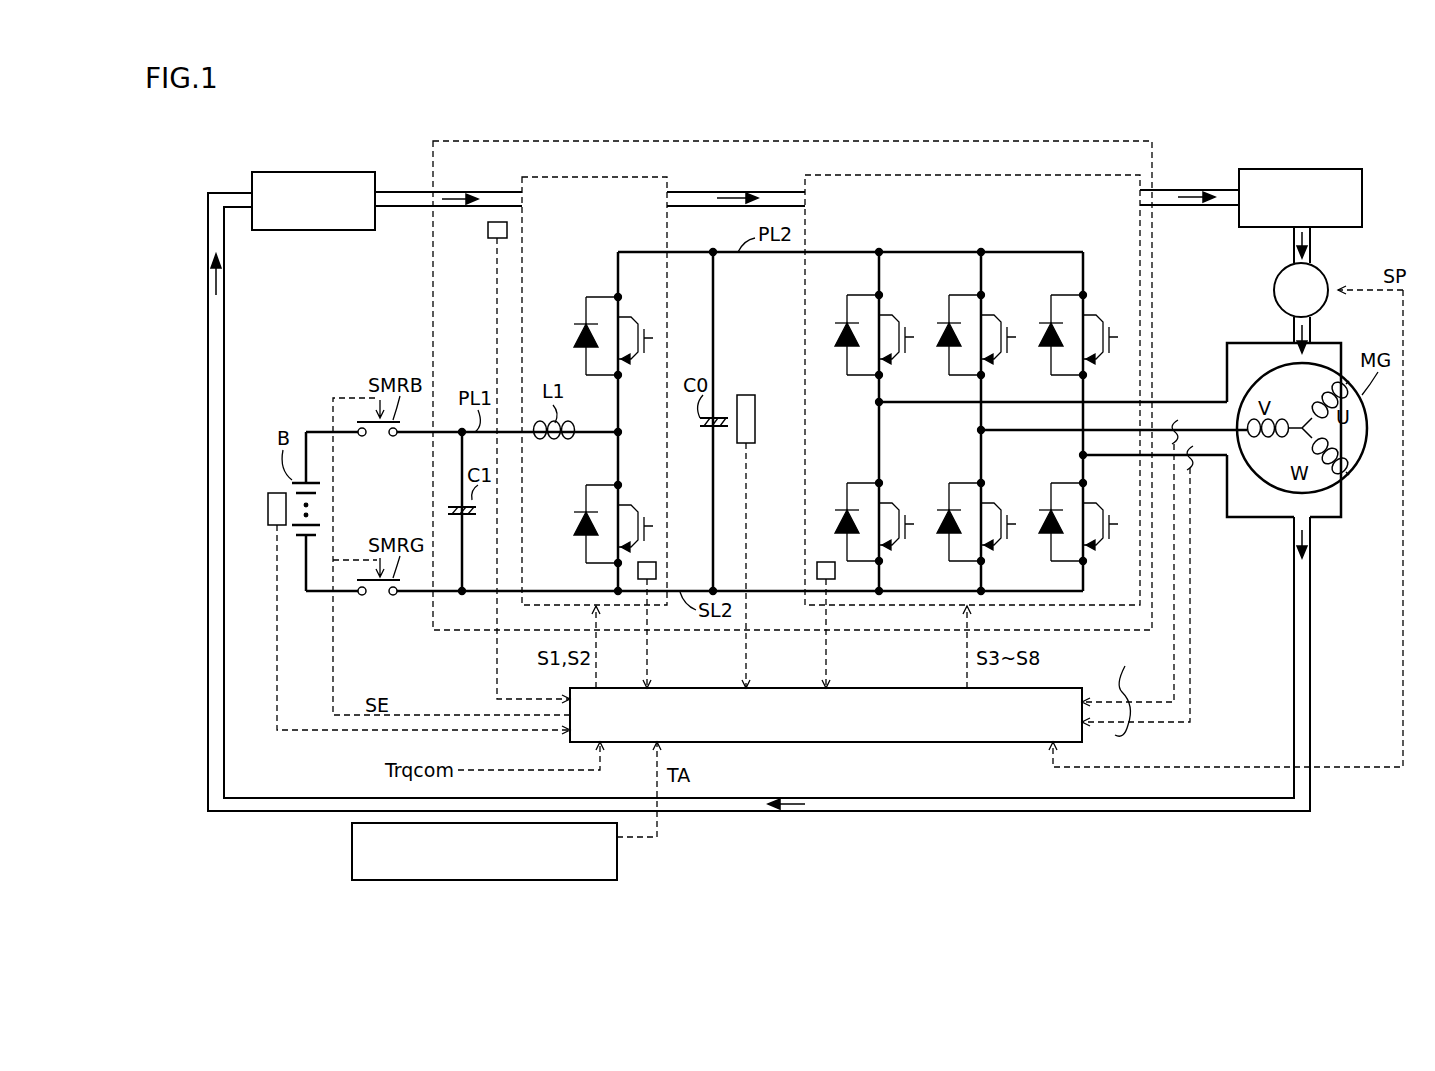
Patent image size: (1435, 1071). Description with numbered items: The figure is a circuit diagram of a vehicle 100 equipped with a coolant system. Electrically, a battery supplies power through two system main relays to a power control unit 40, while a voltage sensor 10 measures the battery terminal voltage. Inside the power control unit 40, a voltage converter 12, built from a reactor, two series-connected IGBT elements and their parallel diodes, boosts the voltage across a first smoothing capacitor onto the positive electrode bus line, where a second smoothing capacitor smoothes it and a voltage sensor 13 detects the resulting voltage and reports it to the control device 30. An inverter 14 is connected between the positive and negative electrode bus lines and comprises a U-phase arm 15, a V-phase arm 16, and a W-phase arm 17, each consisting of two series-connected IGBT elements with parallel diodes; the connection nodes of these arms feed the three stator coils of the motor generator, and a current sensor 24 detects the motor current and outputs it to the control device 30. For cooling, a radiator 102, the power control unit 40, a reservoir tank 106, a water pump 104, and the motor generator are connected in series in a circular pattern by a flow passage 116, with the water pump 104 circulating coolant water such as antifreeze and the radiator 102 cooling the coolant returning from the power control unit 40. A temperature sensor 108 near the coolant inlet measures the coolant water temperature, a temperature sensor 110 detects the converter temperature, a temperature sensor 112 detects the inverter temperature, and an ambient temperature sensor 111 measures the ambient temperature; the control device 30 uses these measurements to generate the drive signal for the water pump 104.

The vehicle 100 is at (242, 128).
The radiator 102 is at (322, 172).
The water pump 104 is at (1320, 272).
The reservoir tank 106 is at (1312, 169).
The temperature sensor 108 is at (488, 230).
The temperature sensor 110 is at (655, 562).
The ambient temperature sensor 111 is at (352, 840).
The temperature sensor 112 is at (817, 571).
The flow passage 116 is at (231, 823).
The voltage sensor 10 is at (272, 493).
The voltage converter 12 is at (600, 177).
The voltage sensor 13 is at (746, 395).
The inverter 14 is at (972, 175).
The U-phase arm 15 is at (872, 405).
The V-phase arm 16 is at (975, 433).
The W-phase arm 17 is at (1075, 457).
The current sensor 24 is at (1178, 420).
The control device 30 is at (895, 688).
The power control unit 40 is at (1108, 141).